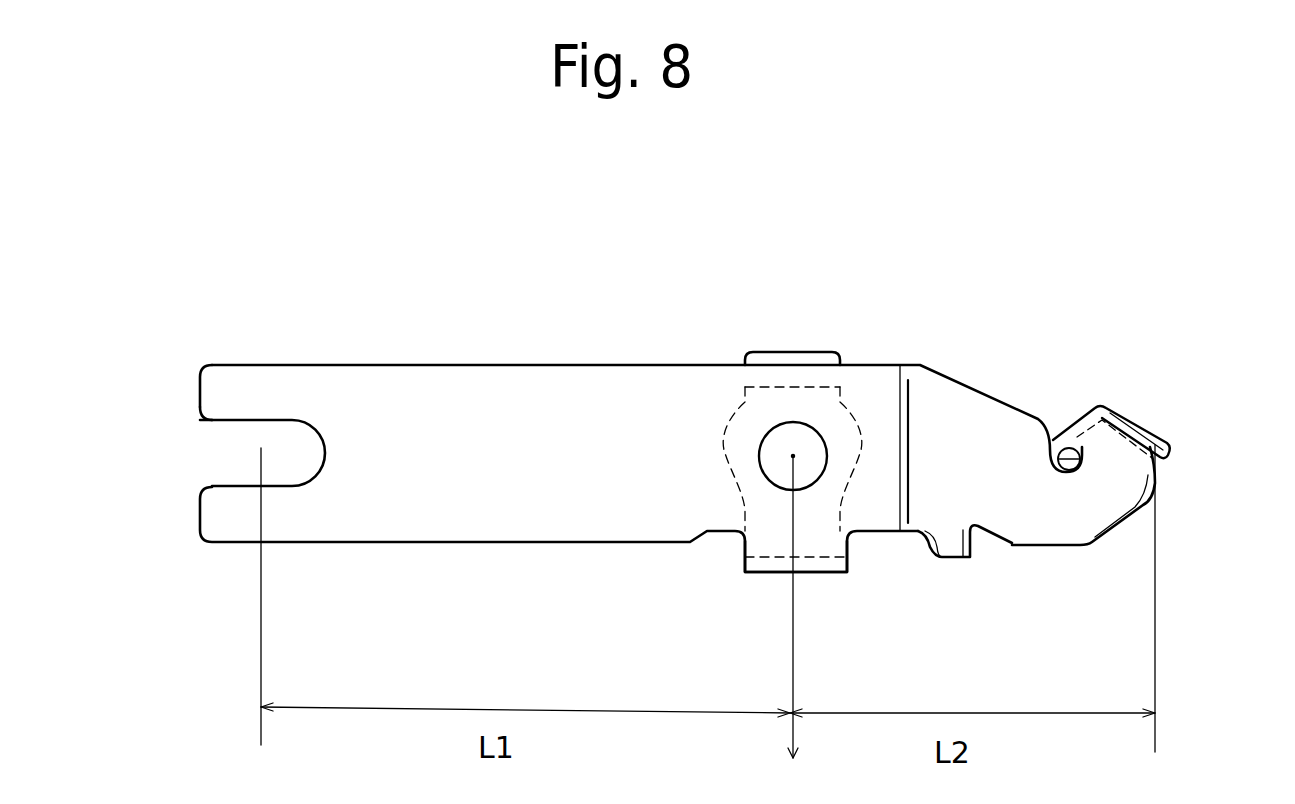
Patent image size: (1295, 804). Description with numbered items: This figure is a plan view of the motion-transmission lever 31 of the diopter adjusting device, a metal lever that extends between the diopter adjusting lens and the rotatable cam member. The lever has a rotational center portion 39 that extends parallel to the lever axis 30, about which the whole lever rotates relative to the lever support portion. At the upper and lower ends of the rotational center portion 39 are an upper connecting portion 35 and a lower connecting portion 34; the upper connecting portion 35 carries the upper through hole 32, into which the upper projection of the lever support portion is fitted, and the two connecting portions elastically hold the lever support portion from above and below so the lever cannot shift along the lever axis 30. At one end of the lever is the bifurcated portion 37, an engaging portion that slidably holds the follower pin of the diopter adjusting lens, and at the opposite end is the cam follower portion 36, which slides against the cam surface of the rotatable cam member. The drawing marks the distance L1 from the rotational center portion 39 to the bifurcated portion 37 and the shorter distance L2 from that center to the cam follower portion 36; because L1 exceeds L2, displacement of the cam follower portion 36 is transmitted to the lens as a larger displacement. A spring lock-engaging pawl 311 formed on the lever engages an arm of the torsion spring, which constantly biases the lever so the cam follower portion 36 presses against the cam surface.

The motion-transmission lever 31 is at (968, 137).
The bifurcated portion 37 is at (237, 422).
The lower connecting portion 34 is at (793, 354).
The upper connecting portion 35 is at (750, 447).
The upper through hole 32 is at (806, 432).
The lever axis 30 is at (795, 456).
The rotational center portion 39 is at (760, 573).
The cam follower portion 36 is at (1163, 433).
The spring lock-engaging pawl 311 is at (960, 560).